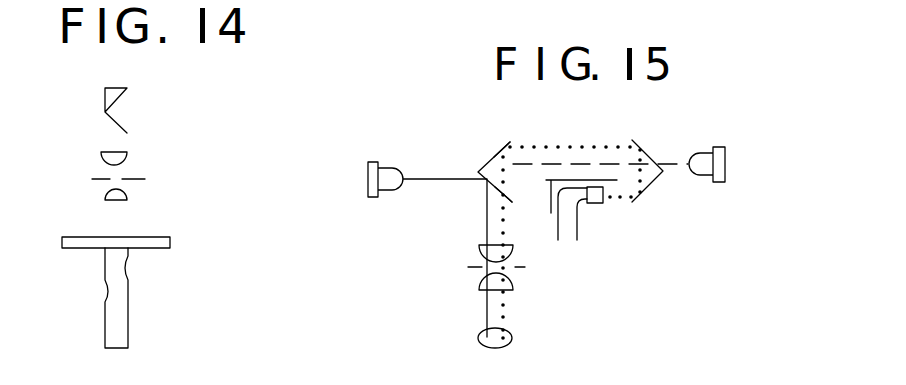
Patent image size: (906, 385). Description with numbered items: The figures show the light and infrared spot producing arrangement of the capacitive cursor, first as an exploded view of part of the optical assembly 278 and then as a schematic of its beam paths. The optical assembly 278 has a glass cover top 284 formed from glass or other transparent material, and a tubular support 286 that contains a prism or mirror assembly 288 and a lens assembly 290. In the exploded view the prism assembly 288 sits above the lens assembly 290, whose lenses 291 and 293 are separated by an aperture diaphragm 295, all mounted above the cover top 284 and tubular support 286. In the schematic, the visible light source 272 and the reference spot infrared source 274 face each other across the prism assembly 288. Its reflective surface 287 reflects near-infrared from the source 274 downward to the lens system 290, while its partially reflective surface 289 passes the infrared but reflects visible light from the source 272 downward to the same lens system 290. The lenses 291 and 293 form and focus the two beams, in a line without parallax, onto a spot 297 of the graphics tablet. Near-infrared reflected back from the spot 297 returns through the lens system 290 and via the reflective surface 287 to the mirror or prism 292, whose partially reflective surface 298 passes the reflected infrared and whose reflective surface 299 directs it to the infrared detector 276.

In FIG. 15, the visible light source 272 is at (400, 120).
In FIG. 15, the reference spot infrared source 274 is at (730, 152).
In FIG. 15, the infrared detector 276 is at (580, 200).
In FIG. 14, the optical assembly 278 is at (149, 114).
In FIG. 14, the glass cover top 284 is at (152, 237).
In FIG. 14, the tubular support 286 is at (122, 318).
In FIG. 15, the reflective surface 287 is at (497, 143).
In FIG. 14, the prism or mirror assembly 288 is at (99, 89).
In FIG. 15, the prism or mirror assembly 288 is at (475, 154).
In FIG. 15, the partially reflective surface 289 is at (497, 190).
In FIG. 14, the lens assembly 290 is at (152, 157).
In FIG. 15, the lens assembly 290 is at (458, 278).
In FIG. 14, the lens 291 is at (104, 158).
In FIG. 15, the mirror or prism 292 is at (656, 126).
In FIG. 14, the lens 293 is at (104, 196).
In FIG. 14, the aperture 295 is at (90, 179).
In FIG. 15, the spot 297 is at (513, 333).
In FIG. 15, the partially reflective surface 298 is at (641, 140).
In FIG. 15, the reflective surface 299 is at (655, 190).